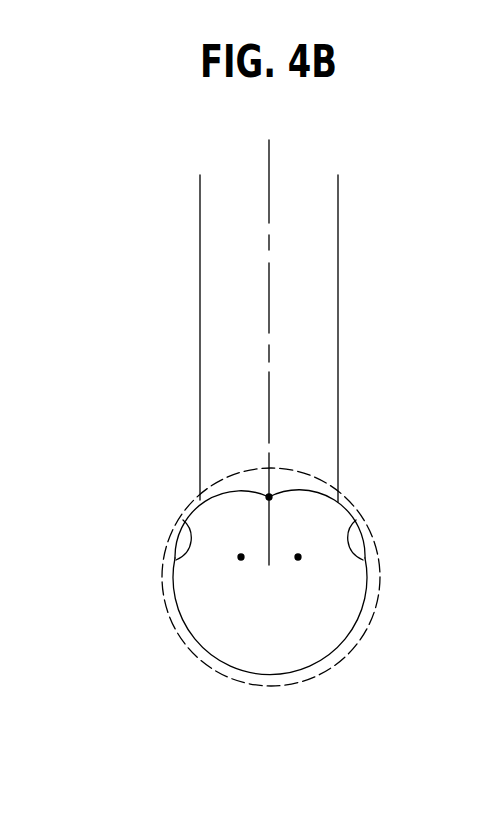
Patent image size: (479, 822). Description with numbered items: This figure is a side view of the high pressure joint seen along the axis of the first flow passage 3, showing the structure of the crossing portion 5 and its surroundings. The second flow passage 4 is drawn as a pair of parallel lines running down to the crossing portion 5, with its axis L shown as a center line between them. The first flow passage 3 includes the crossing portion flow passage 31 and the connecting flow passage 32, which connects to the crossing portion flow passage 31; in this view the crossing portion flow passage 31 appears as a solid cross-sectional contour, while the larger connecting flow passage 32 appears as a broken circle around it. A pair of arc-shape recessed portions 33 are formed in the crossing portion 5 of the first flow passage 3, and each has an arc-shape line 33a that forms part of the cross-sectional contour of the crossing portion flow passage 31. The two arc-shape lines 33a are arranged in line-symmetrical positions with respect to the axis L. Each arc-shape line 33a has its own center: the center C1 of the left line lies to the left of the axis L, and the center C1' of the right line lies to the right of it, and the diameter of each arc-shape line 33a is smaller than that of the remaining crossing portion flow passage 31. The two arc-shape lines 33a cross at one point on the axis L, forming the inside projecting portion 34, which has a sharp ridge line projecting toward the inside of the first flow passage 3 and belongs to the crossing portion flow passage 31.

The axis of the second flow passage L is at (269, 165).
The second flow passage 4 is at (349, 321).
The crossing portion 5 is at (273, 499).
The arc-shape recessed portion 33 is at (183, 500).
The arc-shape line 33a is at (176, 559).
The inside projecting portion 34 is at (265, 511).
The center of the left side arc-shape line C1 is at (183, 606).
The center of the right side arc-shape line C1' is at (372, 577).
The first flow passage 3 is at (320, 597).
The crossing portion flow passage 31 is at (311, 647).
The connecting flow passage 32 is at (366, 628).